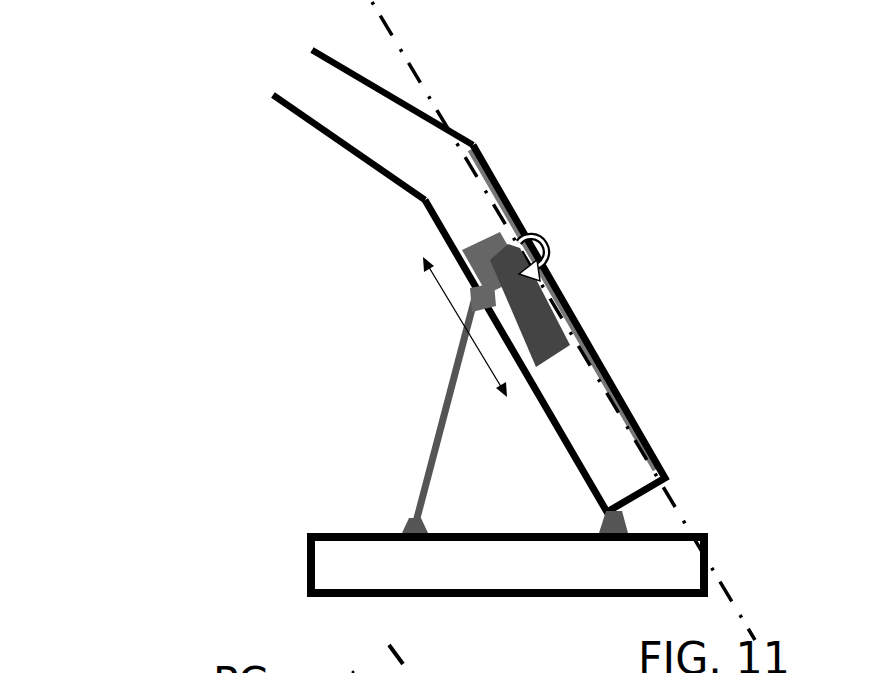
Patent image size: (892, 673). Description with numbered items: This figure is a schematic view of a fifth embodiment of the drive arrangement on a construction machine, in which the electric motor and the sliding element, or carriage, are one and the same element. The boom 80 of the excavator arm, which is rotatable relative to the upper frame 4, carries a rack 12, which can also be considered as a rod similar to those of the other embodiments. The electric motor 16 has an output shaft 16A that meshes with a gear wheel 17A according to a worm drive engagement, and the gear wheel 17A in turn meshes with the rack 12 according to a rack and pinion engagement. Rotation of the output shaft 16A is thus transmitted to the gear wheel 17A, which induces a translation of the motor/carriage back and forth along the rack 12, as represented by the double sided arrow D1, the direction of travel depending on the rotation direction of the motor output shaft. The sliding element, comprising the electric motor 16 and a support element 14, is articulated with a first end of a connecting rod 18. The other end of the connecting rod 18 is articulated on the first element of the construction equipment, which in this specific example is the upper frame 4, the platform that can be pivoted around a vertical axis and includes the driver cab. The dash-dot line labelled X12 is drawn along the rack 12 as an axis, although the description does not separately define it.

The upper frame 4 is at (507, 552).
The rack 12 is at (477, 147).
The support element 14 is at (477, 237).
The electric motor 16 is at (550, 357).
The output shaft 16A is at (493, 263).
The gear wheel 17A is at (508, 222).
The connecting rod 18 is at (427, 470).
The boom 80 is at (373, 125).
The pivot axis X12 is at (563, 321).
The double sided arrow D1 is at (448, 327).